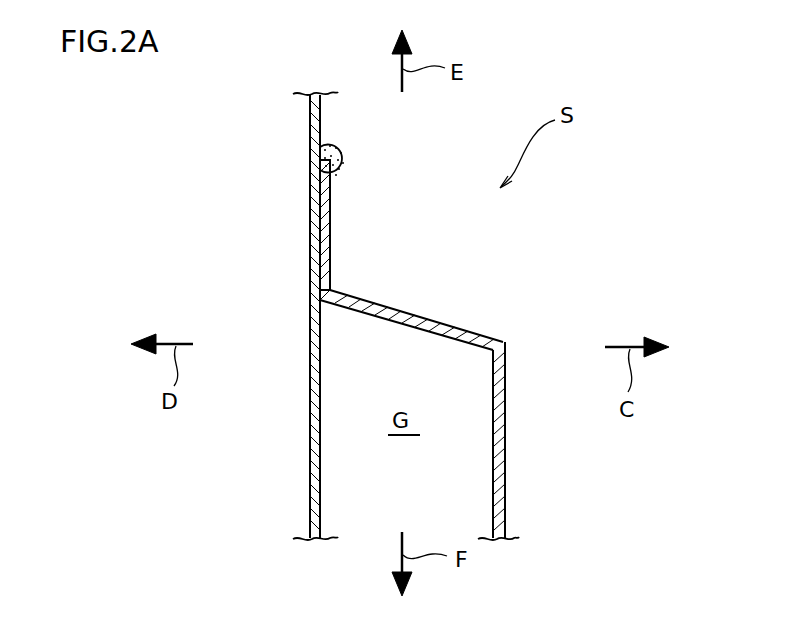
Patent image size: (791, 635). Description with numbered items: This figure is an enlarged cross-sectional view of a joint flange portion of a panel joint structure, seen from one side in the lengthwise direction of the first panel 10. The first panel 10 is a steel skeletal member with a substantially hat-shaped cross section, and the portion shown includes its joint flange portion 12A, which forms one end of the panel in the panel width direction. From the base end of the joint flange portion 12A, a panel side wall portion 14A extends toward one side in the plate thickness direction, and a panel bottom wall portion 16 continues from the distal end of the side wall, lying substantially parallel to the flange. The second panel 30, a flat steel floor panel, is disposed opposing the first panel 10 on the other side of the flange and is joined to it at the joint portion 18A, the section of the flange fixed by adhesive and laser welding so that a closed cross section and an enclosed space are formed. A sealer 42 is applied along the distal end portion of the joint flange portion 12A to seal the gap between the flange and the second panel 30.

The first panel 10 is at (476, 332).
The joint flange portion 12A is at (330, 220).
The panel side wall portion 14A is at (427, 308).
The panel bottom wall portion 16 is at (505, 442).
The joint portion 18A is at (330, 280).
The second panel 30 is at (308, 434).
The sealer 42 is at (347, 155).